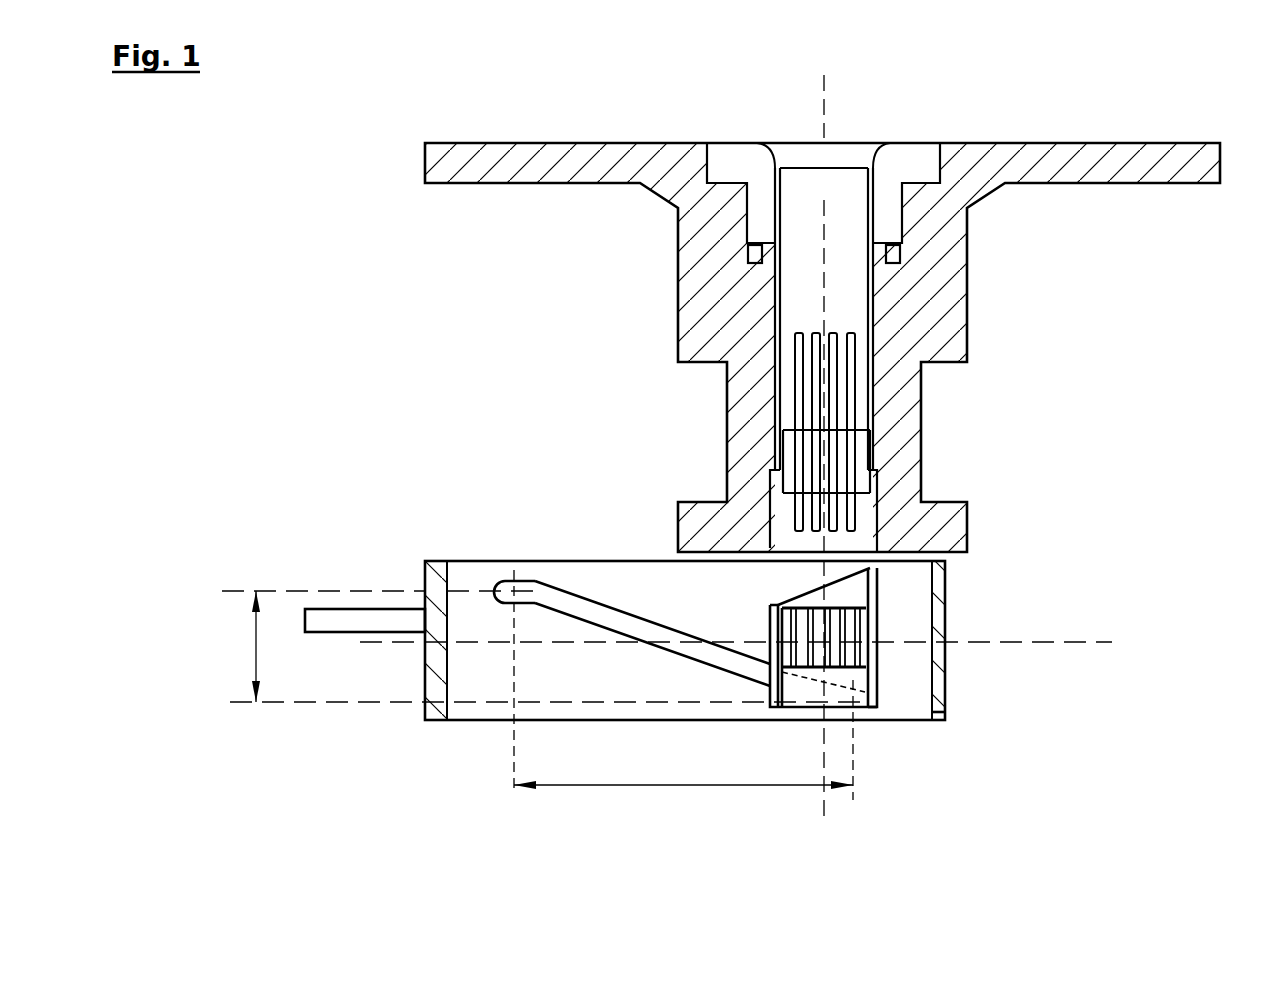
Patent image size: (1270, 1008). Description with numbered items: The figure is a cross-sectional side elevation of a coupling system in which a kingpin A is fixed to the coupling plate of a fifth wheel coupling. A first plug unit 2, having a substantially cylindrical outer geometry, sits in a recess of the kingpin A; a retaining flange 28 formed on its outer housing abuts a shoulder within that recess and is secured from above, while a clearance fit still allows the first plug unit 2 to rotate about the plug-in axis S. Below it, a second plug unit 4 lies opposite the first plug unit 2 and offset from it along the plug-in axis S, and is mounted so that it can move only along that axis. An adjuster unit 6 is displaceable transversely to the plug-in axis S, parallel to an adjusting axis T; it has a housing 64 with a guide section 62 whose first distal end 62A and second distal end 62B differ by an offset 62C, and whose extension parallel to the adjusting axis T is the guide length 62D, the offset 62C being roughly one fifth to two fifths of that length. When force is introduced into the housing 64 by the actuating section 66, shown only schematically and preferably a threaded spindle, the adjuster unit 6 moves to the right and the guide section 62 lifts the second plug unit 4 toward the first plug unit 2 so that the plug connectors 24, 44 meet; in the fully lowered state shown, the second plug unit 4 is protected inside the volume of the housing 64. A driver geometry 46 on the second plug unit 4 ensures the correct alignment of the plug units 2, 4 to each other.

The first plug unit 2 is at (878, 512).
The kingpin A is at (992, 248).
The retaining flange 28 is at (895, 256).
The plug connector 24 is at (812, 372).
The second plug unit 4 is at (872, 652).
The plug connector 44 is at (810, 600).
The driver geometry 46 is at (805, 605).
The adjuster unit 6 is at (955, 688).
The guide section 62 is at (605, 600).
The first distal end 62A is at (945, 712).
The second distal end 62B is at (515, 588).
The offset 62C is at (255, 641).
The guide length 62D is at (682, 786).
The housing 64 is at (887, 707).
The actuating section 66 is at (352, 610).
The plug-in axis S is at (825, 752).
The adjusting axis T is at (1045, 643).